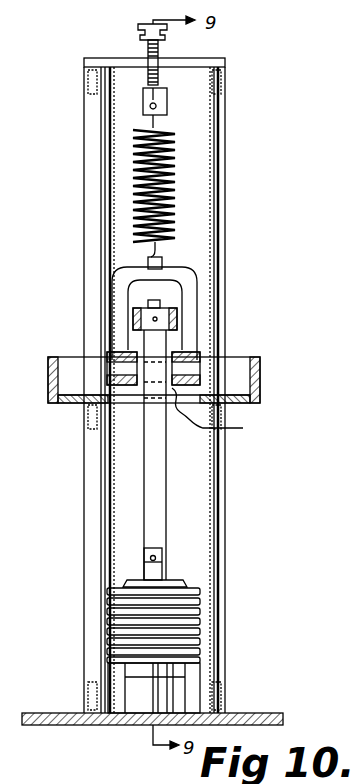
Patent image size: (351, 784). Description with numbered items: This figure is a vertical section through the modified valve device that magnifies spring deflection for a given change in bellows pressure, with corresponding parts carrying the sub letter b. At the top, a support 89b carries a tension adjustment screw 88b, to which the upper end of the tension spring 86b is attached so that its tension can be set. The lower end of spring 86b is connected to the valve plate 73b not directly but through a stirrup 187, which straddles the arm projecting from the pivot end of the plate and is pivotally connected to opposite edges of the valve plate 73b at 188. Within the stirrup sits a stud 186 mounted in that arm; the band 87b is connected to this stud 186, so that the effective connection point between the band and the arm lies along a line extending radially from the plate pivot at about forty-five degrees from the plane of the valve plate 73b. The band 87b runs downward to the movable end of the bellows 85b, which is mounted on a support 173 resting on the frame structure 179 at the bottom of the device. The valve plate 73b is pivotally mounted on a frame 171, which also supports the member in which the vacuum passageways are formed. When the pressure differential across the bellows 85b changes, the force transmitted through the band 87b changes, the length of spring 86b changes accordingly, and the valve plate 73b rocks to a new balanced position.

The support 89b is at (124, 62).
The tension adjustment screw 88b is at (162, 48).
The tension spring 86b is at (172, 148).
The stirrup 187 is at (198, 284).
The stud 186 is at (178, 318).
The pivotal connection 188 is at (122, 353).
The frame 171 is at (258, 376).
The valve plate 73b is at (224, 413).
The band 87b is at (160, 499).
The bellows 85b is at (185, 583).
The support 173 is at (185, 679).
The frame structure 179 is at (262, 713).